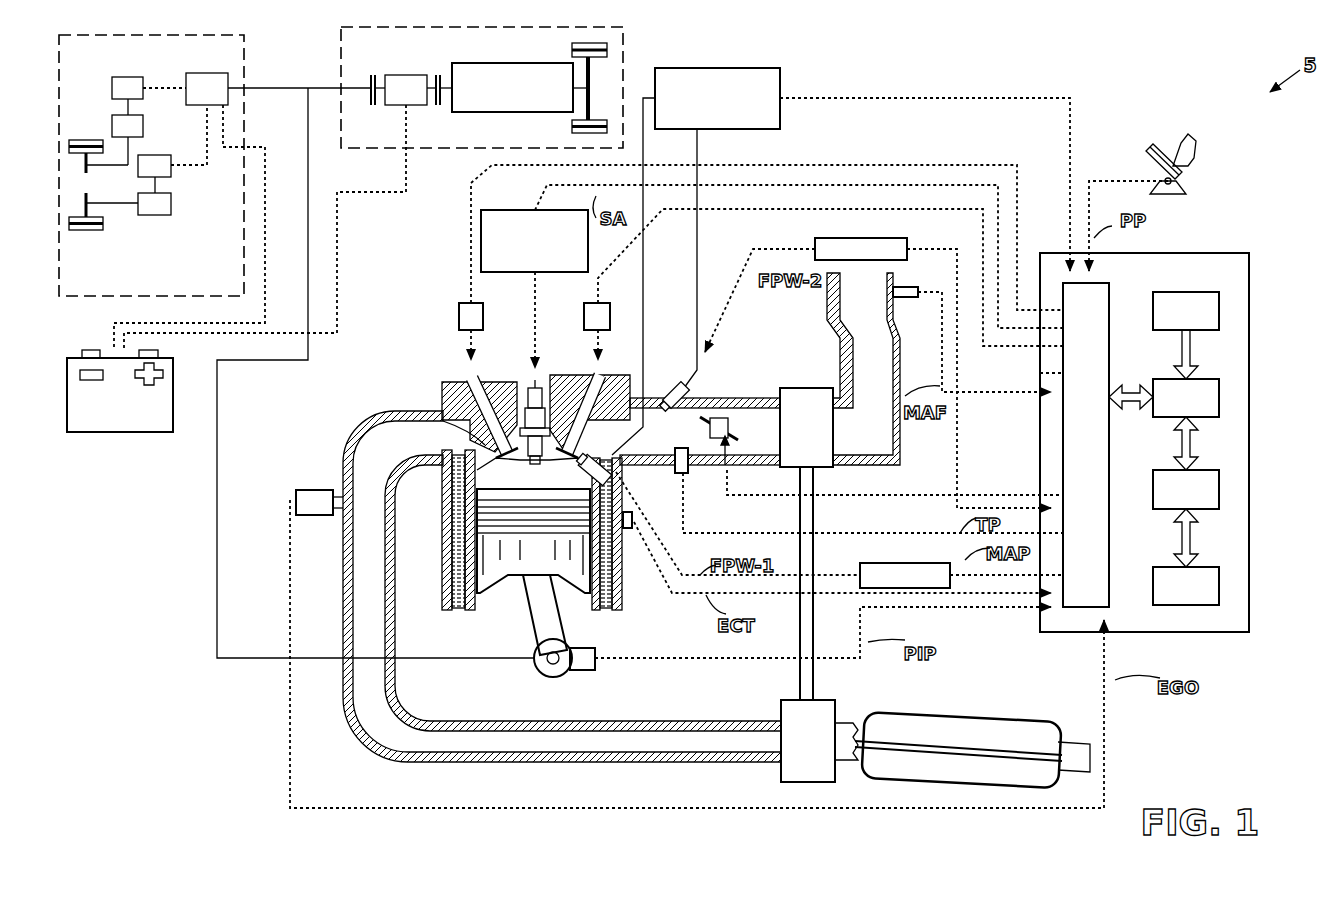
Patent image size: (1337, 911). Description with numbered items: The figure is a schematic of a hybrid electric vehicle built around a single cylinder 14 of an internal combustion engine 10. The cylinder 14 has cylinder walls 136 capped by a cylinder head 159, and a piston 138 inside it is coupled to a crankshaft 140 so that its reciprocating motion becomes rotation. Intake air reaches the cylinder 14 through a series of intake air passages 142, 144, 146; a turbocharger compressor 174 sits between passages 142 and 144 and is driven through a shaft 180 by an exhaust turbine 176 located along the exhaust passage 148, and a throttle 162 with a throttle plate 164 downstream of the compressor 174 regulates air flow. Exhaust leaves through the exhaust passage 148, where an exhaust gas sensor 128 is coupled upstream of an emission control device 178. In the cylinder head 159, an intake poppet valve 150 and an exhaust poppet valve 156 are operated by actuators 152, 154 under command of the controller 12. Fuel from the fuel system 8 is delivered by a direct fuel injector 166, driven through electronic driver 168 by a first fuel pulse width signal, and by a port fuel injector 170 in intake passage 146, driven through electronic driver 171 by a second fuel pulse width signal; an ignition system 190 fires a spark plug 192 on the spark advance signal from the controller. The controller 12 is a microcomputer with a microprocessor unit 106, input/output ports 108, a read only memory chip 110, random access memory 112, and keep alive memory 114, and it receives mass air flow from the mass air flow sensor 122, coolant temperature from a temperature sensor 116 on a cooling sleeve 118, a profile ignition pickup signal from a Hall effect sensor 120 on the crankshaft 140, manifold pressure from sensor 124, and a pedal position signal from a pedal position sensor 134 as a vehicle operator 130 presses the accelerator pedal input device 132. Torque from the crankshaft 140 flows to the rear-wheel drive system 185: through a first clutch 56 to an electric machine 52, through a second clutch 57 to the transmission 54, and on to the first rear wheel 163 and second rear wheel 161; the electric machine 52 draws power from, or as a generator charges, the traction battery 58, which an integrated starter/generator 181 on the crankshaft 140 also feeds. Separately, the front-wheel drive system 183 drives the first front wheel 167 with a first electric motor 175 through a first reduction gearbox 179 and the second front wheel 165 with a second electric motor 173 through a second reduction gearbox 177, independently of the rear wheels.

The fuel system 8 is at (750, 68).
The internal combustion engine 10 is at (529, 494).
The controller 12 is at (1249, 256).
The cylinder 14 is at (458, 490).
The electric machine 52 is at (404, 75).
The transmission 54 is at (478, 63).
The first clutch 56 is at (371, 75).
The second clutch 57 is at (438, 75).
The traction battery 58 is at (152, 432).
The microprocessor unit 106 is at (1219, 397).
The input/output ports 108 is at (1109, 292).
The read only memory chip 110 is at (1219, 310).
The random access memory 112 is at (1219, 489).
The keep alive memory 114 is at (1219, 586).
The temperature sensor 116 is at (630, 530).
The cooling sleeve 118 is at (606, 565).
The Hall effect sensor 120 is at (585, 670).
The mass air flow sensor 122 is at (905, 287).
The manifold pressure sensor 124 is at (683, 473).
The exhaust gas sensor 128 is at (296, 494).
The vehicle operator 130 is at (1196, 145).
The input device 132 is at (1150, 160).
The pedal position sensor 134 is at (1178, 183).
The cylinder walls 136 is at (461, 612).
The piston 138 is at (515, 565).
The crankshaft 140 is at (545, 676).
The intake air passage 142 is at (850, 316).
The intake air passage 144 is at (701, 443).
The intake air passage 146 is at (658, 444).
The exhaust passage 148 is at (402, 447).
The intake poppet valve 150 is at (548, 410).
The actuator 152 is at (584, 310).
The actuator 154 is at (483, 315).
The exhaust poppet valve 156 is at (444, 400).
The cylinder head 159 is at (470, 378).
The second rear wheel 161 is at (572, 48).
The throttle 162 is at (724, 418).
The first rear wheel 163 is at (572, 125).
The throttle plate 164 is at (703, 418).
The second front wheel 165 is at (71, 135).
The fuel injector 166 is at (604, 458).
The first front wheel 167 is at (90, 230).
The electronic driver 168 is at (860, 566).
The fuel injector 170 is at (670, 385).
The electronic driver 171 is at (815, 241).
The second electric motor 173 is at (118, 77).
The compressor 174 is at (790, 436).
The first electric motor 175 is at (138, 163).
The exhaust turbine 176 is at (825, 753).
The second reduction gearbox 177 is at (112, 123).
The emission control device 178 is at (1020, 716).
The first reduction gearbox 179 is at (165, 215).
The shaft 180 is at (813, 670).
The integrated starter/generator 181 is at (222, 73).
The front-wheel drive system 183 is at (245, 40).
The rear-wheel drive system 185 is at (341, 31).
The ignition system 190 is at (497, 210).
The spark plug 192 is at (528, 395).